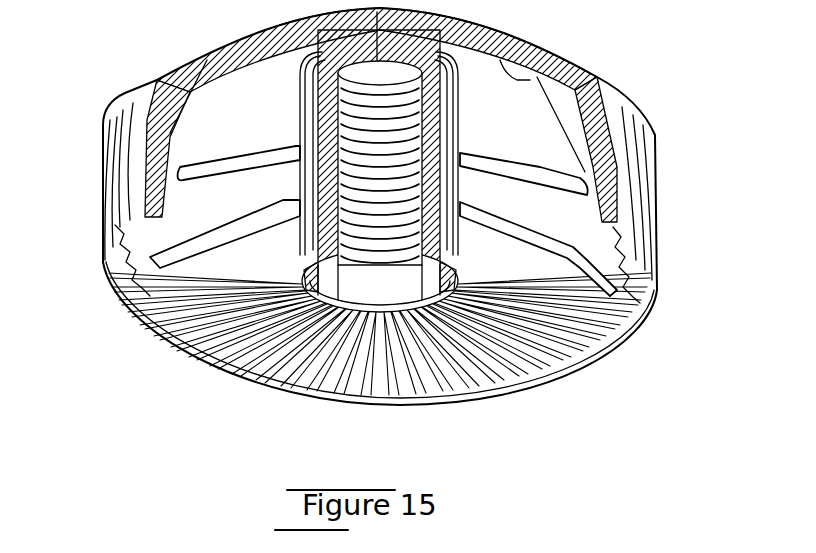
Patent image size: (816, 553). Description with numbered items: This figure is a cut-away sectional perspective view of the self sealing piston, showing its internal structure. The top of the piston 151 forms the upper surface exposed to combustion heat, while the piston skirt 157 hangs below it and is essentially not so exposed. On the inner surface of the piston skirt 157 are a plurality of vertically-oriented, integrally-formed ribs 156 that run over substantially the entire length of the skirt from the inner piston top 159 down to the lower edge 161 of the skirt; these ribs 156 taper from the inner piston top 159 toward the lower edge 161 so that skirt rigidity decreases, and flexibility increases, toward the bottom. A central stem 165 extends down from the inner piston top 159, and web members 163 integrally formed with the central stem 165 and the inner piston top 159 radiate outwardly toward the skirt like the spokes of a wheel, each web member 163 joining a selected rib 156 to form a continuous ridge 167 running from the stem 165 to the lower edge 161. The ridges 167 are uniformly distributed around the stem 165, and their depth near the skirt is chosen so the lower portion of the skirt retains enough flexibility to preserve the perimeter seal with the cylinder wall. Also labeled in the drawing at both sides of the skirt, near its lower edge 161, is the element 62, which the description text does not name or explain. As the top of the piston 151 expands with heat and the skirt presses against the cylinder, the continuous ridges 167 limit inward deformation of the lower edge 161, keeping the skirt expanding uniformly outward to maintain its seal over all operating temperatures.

The toothed ring 62 is at (113, 243).
The top of the piston 151 is at (560, 90).
The ribs 156 is at (193, 88).
The piston skirt 157 is at (173, 137).
The inner piston top 159 is at (267, 57).
The lower edge 161 is at (590, 353).
The web members 163 is at (227, 165).
The central stem 165 is at (300, 83).
The ridge 167 is at (517, 80).